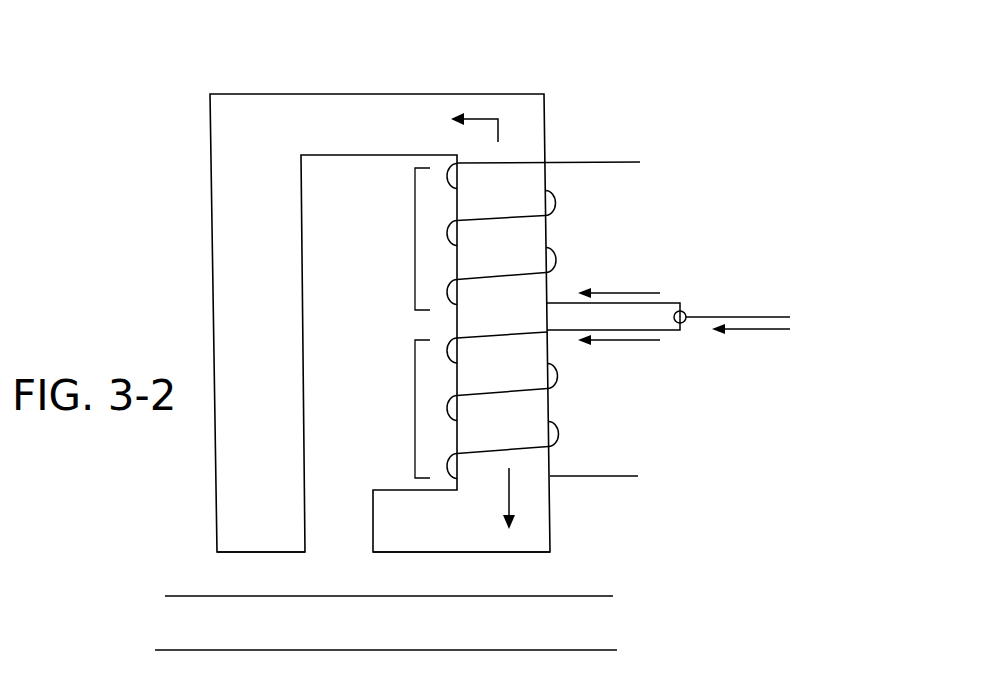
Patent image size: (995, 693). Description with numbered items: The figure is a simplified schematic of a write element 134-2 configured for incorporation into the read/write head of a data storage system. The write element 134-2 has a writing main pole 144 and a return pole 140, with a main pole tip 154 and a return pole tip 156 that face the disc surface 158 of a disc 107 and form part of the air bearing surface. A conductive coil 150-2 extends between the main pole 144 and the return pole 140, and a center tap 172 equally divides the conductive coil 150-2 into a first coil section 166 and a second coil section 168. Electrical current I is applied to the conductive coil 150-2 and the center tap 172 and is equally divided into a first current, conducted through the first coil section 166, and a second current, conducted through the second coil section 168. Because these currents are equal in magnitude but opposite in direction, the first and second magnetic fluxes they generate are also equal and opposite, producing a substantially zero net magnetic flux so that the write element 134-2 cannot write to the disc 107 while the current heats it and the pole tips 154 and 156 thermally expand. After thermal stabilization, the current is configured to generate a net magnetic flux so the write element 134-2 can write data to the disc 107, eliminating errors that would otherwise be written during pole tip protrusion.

The write element 134-2 is at (602, 107).
The return pole 140 is at (263, 252).
The conductive coil 150-2 is at (491, 279).
The writing main pole 144 is at (502, 423).
The first coil section 166 is at (408, 239).
The second coil section 168 is at (408, 409).
The center tap 172 is at (686, 322).
The return pole tip 156 is at (222, 555).
The main pole tip 154 is at (389, 555).
The disc 107 is at (157, 595).
The disc surface 158 is at (562, 596).